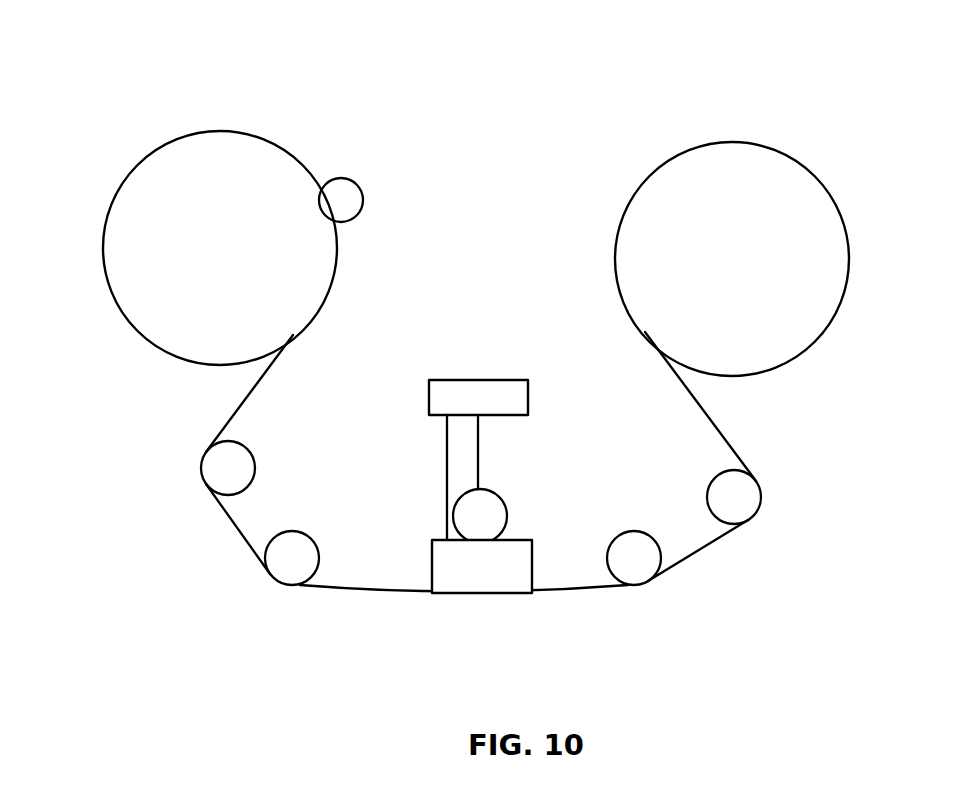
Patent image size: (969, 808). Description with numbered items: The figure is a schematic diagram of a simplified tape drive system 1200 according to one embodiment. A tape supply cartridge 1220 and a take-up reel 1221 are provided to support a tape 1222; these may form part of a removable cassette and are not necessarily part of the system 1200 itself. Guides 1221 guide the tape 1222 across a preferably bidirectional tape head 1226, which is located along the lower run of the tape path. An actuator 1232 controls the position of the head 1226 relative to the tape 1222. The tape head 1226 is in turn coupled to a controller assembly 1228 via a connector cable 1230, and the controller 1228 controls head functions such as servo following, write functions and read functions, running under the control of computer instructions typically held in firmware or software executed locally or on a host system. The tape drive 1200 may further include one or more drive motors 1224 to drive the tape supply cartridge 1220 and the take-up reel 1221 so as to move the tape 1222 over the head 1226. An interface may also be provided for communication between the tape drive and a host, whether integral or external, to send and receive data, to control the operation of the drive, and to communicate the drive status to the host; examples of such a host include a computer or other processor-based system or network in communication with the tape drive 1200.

The tape drive system 1200 is at (108, 116).
The tape supply cartridge 1220 is at (217, 132).
The take-up reel 1221 is at (733, 143).
The tape 1222 is at (362, 590).
The drive motor 1224 is at (363, 202).
The tape head 1226 is at (532, 567).
The controller assembly 1228 is at (478, 379).
The connector cable 1230 is at (447, 513).
The actuator 1232 is at (500, 492).